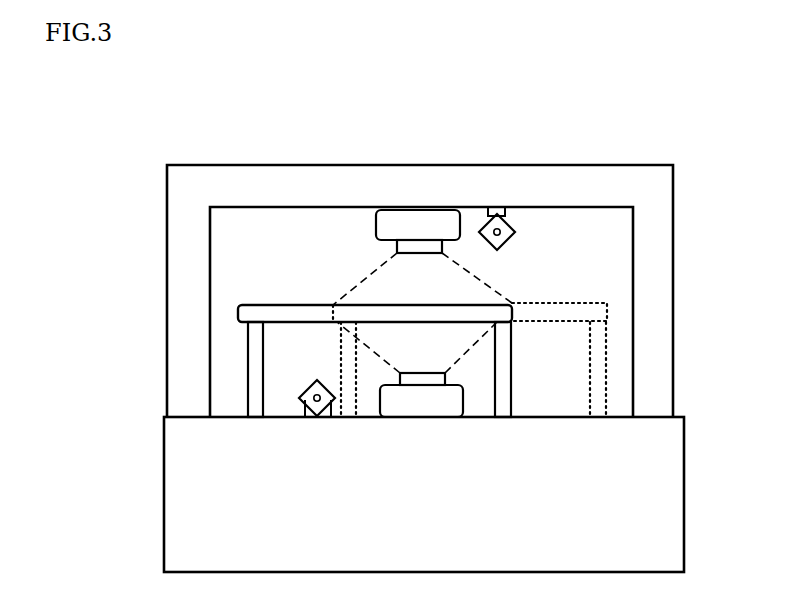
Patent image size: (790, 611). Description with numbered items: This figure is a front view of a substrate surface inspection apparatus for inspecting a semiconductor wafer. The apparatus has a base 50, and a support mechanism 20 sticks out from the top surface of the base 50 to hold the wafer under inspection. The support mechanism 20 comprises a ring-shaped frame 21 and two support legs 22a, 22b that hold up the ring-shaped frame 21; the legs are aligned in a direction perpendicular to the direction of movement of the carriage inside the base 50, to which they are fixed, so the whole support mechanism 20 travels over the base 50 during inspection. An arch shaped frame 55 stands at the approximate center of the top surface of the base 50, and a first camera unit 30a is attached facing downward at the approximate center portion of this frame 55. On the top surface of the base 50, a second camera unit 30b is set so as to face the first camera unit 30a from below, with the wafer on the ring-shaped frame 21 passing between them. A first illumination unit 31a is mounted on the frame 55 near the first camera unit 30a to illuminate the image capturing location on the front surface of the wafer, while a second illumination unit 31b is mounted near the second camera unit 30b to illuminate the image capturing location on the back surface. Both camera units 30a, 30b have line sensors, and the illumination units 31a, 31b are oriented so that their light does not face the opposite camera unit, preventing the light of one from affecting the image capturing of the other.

The support mechanism 20 is at (317, 290).
The ring-shaped frame 21 is at (268, 305).
The support leg 22a is at (253, 367).
The support leg 22b is at (500, 353).
The first camera unit 30a is at (420, 225).
The second camera unit 30b is at (428, 408).
The first illumination unit 31a is at (508, 243).
The second illumination unit 31b is at (313, 385).
The base 50 is at (164, 478).
The arch shaped frame 55 is at (255, 165).